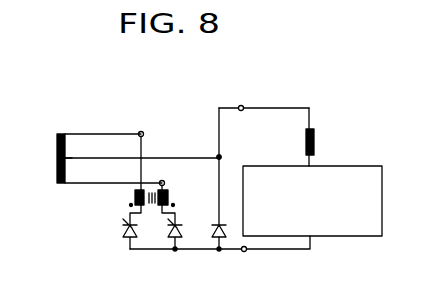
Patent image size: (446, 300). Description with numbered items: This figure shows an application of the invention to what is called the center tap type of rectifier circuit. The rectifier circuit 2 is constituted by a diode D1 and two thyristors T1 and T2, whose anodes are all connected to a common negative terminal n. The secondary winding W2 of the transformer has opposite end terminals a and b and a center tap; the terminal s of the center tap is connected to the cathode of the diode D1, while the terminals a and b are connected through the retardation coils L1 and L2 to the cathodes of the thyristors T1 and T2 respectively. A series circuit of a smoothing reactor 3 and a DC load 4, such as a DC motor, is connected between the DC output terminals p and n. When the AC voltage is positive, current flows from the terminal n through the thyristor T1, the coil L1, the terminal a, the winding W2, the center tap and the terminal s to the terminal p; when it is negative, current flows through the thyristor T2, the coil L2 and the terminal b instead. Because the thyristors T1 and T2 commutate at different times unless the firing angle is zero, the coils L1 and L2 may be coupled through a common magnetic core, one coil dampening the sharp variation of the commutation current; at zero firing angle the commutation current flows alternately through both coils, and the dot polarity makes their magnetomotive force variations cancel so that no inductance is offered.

The rectifier circuit 2 is at (180, 109).
The secondary winding W2 is at (62, 134).
The terminal a is at (139, 134).
The terminal b is at (164, 183).
The retardation coil L1 is at (129, 203).
The retardation coil L2 is at (173, 196).
The thyristor T1 is at (123, 229).
The thyristor T2 is at (176, 247).
The diode D1 is at (219, 250).
The DC output terminal p is at (241, 105).
The terminal of the center tap s is at (221, 157).
The negative terminal n is at (245, 252).
The smoothing reactor 3 is at (314, 142).
The DC load 4 is at (356, 166).